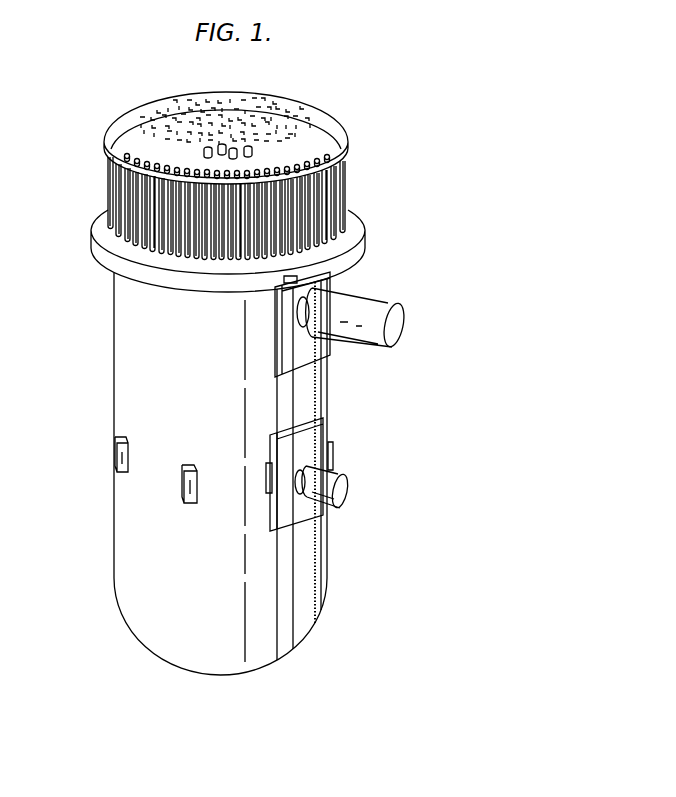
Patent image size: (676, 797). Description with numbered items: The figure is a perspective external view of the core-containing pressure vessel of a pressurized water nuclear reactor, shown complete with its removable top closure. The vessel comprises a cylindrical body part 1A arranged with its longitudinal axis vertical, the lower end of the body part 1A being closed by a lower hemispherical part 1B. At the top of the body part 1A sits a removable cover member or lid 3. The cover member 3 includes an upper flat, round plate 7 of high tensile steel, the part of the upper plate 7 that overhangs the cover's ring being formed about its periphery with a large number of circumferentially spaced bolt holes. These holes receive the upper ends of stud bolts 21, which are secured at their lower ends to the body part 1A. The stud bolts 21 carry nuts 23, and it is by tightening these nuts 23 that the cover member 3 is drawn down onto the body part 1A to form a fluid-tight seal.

The cylindrical body part 1A is at (147, 553).
The lower hemispherical part 1B is at (265, 663).
The cover member 3 is at (293, 225).
The upper flat round plate 7 is at (325, 165).
The stud bolts 21 is at (147, 200).
The nuts 23 is at (330, 151).